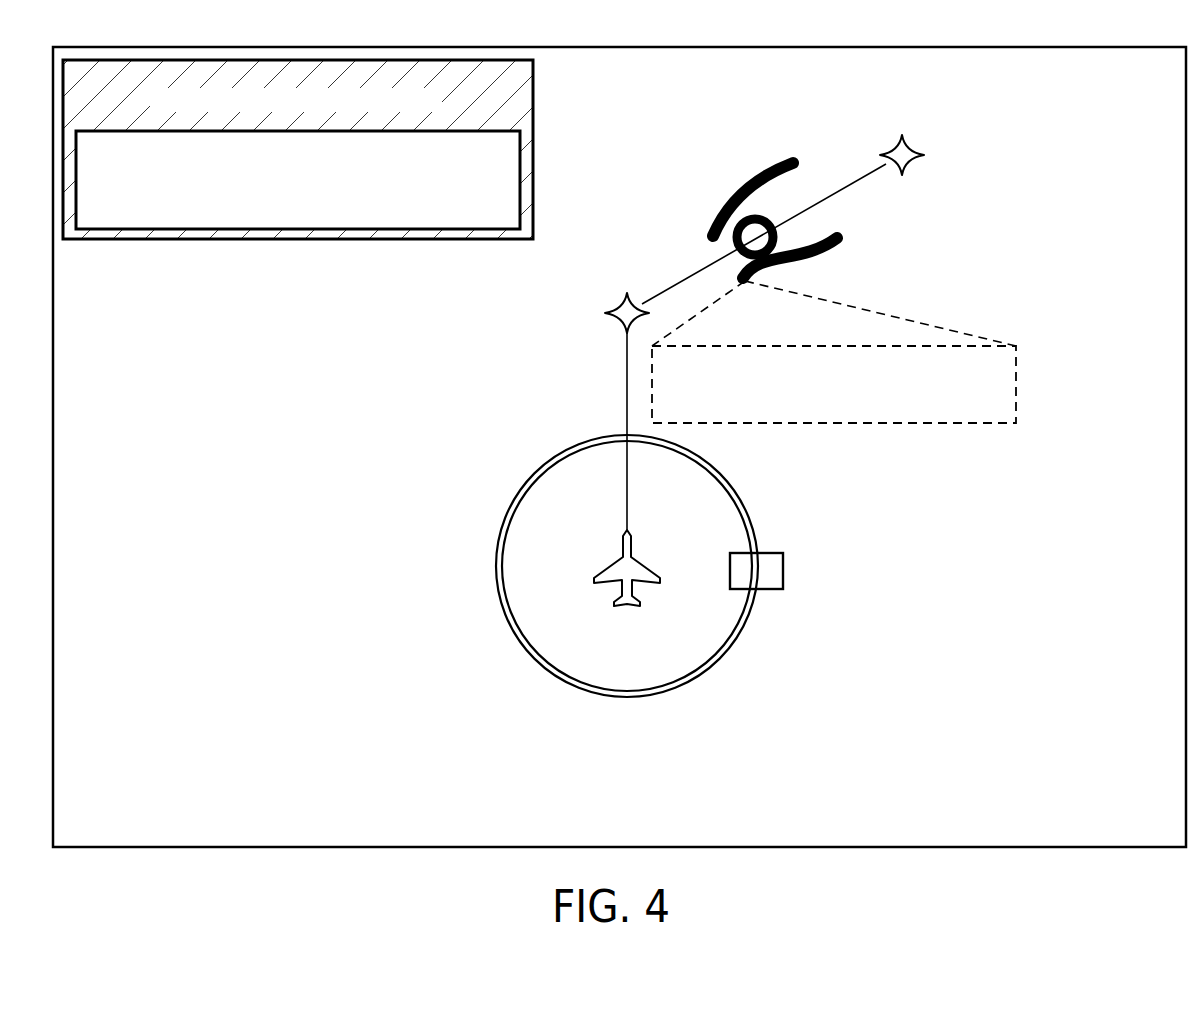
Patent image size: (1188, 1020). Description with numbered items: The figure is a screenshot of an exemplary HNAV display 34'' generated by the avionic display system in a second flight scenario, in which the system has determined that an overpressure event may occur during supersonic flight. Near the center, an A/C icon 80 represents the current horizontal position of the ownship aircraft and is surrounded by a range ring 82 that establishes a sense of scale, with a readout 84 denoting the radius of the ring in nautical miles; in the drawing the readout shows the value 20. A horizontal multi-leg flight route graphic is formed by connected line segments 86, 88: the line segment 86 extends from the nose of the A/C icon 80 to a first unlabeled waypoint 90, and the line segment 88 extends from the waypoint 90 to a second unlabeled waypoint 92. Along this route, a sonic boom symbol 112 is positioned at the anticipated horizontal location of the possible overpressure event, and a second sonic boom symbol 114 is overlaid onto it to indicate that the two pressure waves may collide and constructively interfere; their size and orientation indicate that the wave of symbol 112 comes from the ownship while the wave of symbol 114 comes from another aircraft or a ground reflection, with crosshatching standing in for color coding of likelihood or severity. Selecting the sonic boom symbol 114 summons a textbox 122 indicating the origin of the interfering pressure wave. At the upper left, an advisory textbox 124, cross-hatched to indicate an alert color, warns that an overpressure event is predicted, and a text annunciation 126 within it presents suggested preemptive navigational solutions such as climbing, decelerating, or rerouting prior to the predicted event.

The aircraft 20 is at (756, 575).
The HNAV display 34'' is at (619, 447).
The A/C icon 80 is at (595, 582).
The range ring 82 is at (497, 563).
The readout 84 is at (783, 573).
The line segment 86 is at (625, 498).
The line segment 88 is at (668, 290).
The first unlabeled waypoint 90 is at (621, 305).
The second unlabeled waypoint 92 is at (912, 152).
The sonic boom symbol 112 is at (788, 160).
The sonic boom symbol 114 is at (720, 225).
The textbox 122 is at (1018, 372).
The textbox 124 is at (278, 60).
The text annunciation 126 is at (470, 222).